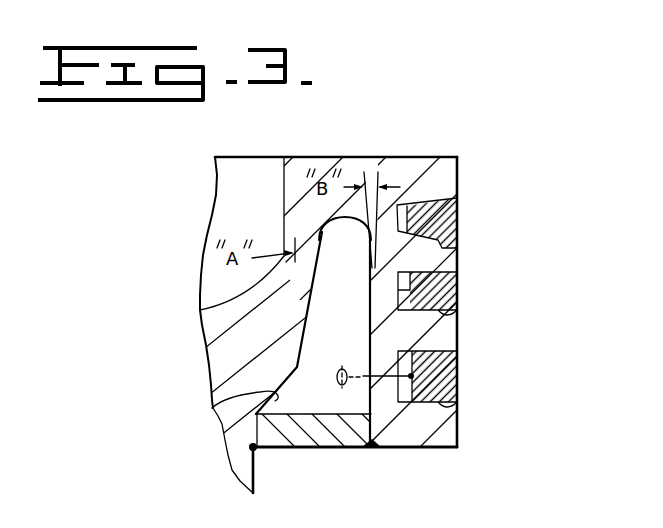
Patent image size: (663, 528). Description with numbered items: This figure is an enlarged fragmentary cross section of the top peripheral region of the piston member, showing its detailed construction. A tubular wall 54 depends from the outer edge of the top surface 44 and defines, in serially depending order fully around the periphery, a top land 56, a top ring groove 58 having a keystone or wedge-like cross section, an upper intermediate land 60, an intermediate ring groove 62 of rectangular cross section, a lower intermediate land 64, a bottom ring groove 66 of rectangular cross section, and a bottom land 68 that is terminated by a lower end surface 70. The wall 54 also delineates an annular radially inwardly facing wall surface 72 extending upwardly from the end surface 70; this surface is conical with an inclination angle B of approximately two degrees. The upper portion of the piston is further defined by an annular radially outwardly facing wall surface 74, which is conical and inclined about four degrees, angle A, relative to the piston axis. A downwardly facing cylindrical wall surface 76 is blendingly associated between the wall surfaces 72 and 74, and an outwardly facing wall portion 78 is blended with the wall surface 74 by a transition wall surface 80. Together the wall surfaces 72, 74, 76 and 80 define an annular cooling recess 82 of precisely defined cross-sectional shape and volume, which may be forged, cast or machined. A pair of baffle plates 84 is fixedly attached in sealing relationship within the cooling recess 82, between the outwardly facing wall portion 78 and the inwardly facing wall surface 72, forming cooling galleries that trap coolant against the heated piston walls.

The top surface 44 is at (373, 156).
The tubular wall 54 is at (440, 175).
The top land 56 is at (458, 184).
The top ring groove 58 is at (460, 243).
The upper intermediate land 60 is at (458, 278).
The intermediate ring groove 62 is at (458, 315).
The lower intermediate land 64 is at (458, 338).
The bottom ring groove 66 is at (458, 395).
The bottom land 68 is at (458, 425).
The lower end surface 70 is at (430, 448).
The radially inwardly facing wall surface 72 is at (371, 322).
The radially outwardly facing wall surface 74 is at (299, 342).
The downwardly facing cylindrical wall surface 76 is at (333, 236).
The outwardly facing wall portion 78 is at (268, 449).
The transition wall surface 80 is at (213, 408).
The annular cooling recess 82 is at (330, 448).
The baffle plates 84 is at (295, 448).